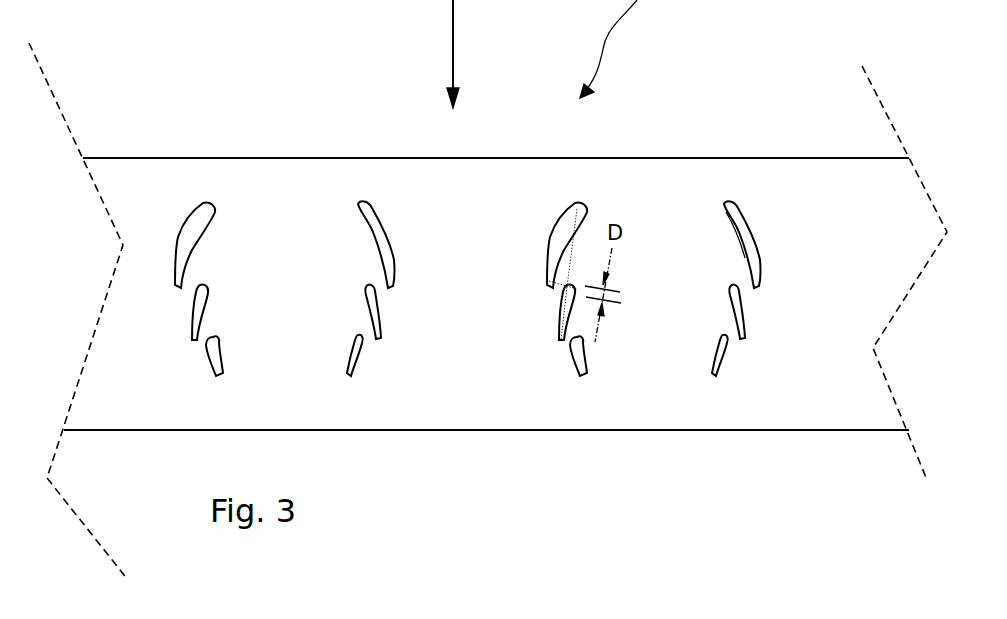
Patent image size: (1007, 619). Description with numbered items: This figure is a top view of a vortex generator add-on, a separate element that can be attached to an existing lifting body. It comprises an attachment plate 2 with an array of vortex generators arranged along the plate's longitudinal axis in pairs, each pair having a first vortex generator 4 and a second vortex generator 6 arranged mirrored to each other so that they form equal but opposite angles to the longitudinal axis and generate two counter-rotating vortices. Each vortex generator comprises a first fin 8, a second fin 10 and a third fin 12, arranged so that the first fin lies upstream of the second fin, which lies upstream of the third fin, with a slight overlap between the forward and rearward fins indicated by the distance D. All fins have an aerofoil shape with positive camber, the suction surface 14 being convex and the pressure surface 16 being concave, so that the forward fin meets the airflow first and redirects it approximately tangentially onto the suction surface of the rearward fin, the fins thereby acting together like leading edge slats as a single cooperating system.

The attachment plate 2 is at (135, 170).
The first vortex generator 4 is at (195, 172).
The second vortex generator 6 is at (409, 280).
The first fin 8 is at (390, 223).
The second fin 10 is at (380, 307).
The third fin 12 is at (363, 360).
The suction surface 14 is at (760, 222).
The pressure surface 16 is at (733, 230).